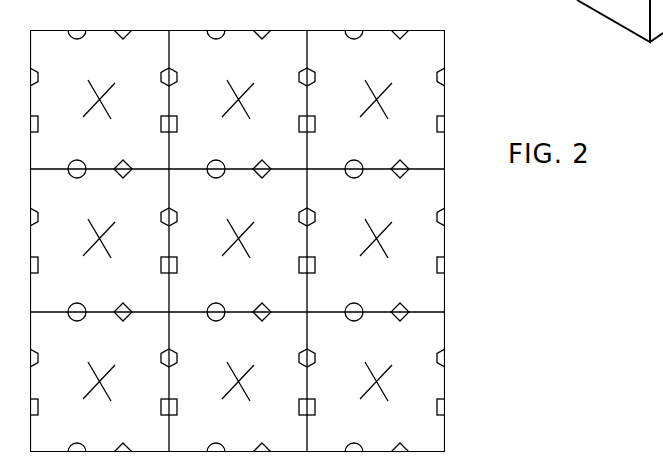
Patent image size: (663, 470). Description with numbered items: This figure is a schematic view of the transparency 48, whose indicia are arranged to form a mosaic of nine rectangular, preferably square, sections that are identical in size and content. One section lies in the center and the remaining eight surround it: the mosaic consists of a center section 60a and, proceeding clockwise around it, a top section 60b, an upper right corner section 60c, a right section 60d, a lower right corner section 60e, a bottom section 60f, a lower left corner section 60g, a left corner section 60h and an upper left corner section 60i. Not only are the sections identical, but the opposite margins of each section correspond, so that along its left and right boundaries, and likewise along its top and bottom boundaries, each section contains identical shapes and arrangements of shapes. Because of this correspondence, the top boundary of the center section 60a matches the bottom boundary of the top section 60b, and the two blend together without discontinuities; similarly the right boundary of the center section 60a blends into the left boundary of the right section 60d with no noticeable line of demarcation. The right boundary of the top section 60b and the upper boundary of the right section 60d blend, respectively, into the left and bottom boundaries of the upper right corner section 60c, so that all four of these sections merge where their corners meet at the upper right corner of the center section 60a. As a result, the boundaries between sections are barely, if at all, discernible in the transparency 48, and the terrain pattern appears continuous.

The transparency 48 is at (480, 329).
The center section 60a is at (244, 222).
The top section 60b is at (246, 85).
The upper right corner section 60c is at (381, 85).
The right section 60d is at (381, 223).
The lower right corner section 60e is at (378, 364).
The bottom section 60f is at (242, 365).
The lower left corner section 60g is at (103, 365).
The left corner section 60h is at (104, 223).
The upper left corner section 60i is at (105, 85).